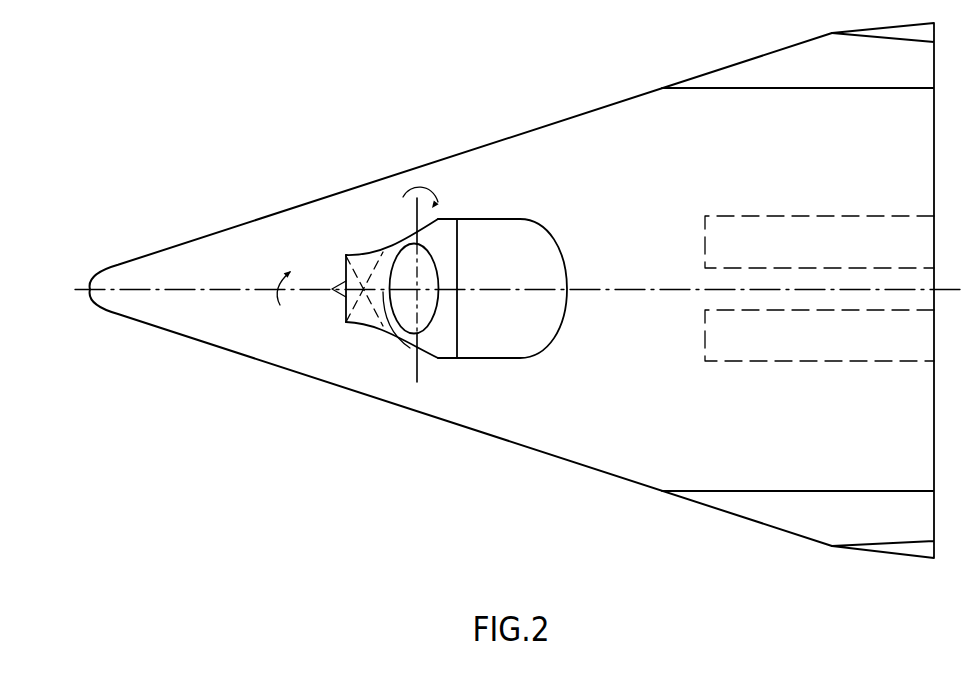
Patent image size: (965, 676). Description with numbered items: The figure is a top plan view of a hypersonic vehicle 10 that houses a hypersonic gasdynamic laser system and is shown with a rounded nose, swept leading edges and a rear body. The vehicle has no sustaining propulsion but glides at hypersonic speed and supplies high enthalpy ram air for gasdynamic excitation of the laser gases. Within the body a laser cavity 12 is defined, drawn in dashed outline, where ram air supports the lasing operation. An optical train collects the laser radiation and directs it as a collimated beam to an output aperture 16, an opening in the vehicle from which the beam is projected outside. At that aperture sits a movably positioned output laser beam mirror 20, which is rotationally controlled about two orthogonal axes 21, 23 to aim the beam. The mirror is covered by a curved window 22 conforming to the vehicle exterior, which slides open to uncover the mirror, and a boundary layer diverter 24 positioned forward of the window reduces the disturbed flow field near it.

The hypersonic vehicle 10 is at (634, 178).
The laser cavity 12 is at (792, 255).
The output aperture 16 is at (413, 230).
The output laser beam mirror 20 is at (410, 318).
The first orthogonal axis 21 is at (417, 217).
The curved window 22 is at (427, 340).
The second orthogonal axis 23 is at (312, 289).
The boundary layer diverter 24 is at (346, 313).